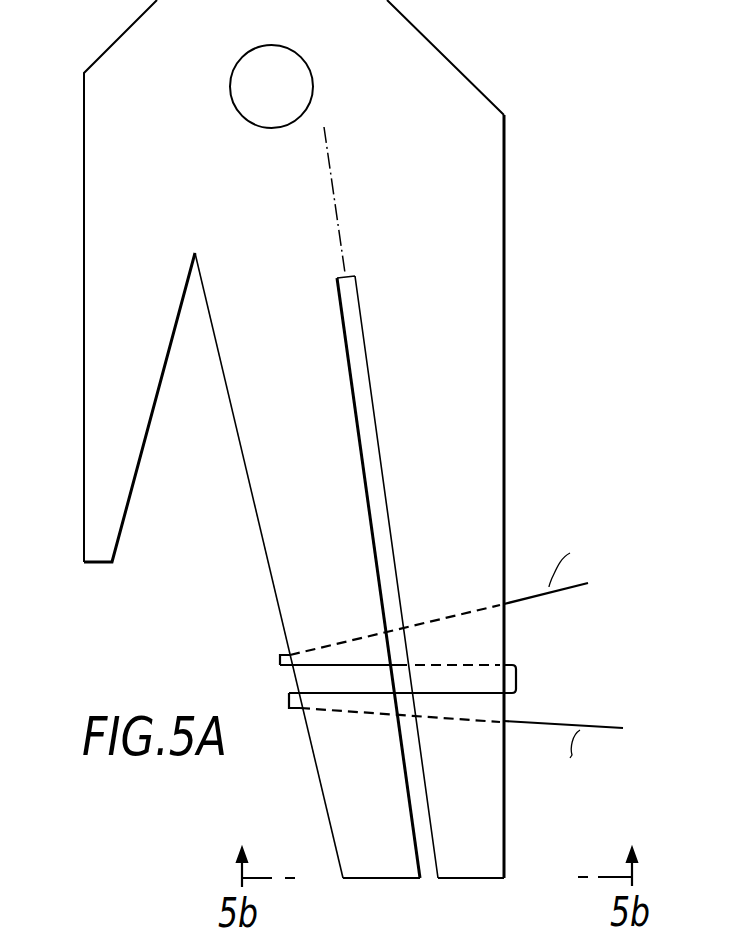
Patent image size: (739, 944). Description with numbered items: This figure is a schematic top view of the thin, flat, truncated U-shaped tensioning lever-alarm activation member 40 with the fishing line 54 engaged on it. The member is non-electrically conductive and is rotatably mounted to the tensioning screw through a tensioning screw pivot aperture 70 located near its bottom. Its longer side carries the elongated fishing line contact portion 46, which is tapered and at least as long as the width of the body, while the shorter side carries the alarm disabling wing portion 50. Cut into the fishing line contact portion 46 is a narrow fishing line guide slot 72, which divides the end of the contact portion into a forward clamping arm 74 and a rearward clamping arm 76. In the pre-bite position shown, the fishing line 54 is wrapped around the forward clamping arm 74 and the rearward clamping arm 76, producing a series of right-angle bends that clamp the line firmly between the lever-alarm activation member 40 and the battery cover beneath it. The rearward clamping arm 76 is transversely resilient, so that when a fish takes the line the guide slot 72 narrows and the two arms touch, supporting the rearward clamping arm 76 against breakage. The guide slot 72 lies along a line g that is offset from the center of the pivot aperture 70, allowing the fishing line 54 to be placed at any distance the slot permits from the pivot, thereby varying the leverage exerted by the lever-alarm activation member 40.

The tensioning lever-alarm activation member 40 is at (478, 187).
The fishing line contact portion 46 is at (483, 410).
The alarm disabling wing portion 50 is at (98, 432).
The fishing line 54 is at (528, 722).
The tensioning screw pivot aperture 70 is at (232, 85).
The fishing line guide slot 72 is at (431, 873).
The forward clamping arm 74 is at (494, 831).
The rearward clamping arm 76 is at (331, 790).
The line g is at (330, 165).